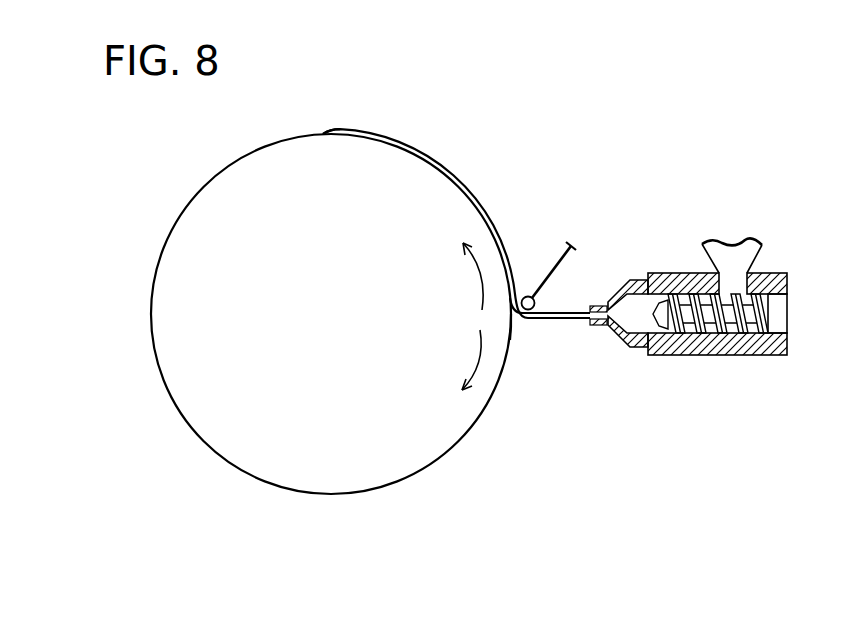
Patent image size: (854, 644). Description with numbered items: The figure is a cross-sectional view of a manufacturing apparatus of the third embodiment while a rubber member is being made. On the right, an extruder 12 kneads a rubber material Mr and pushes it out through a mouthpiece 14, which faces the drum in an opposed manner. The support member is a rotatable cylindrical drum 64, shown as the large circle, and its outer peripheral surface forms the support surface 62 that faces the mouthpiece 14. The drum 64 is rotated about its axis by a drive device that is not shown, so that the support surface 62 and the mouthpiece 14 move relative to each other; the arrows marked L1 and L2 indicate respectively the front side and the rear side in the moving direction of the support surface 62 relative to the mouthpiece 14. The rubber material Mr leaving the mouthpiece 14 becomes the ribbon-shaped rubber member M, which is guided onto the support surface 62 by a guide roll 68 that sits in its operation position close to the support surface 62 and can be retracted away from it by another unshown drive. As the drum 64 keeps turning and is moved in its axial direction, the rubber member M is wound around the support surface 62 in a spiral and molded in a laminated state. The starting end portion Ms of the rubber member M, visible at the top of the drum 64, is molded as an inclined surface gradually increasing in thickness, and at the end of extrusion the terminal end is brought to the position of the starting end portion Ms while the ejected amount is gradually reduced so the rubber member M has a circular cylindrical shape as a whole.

The drum 64 is at (277, 460).
The support surface 62 is at (513, 338).
The rubber member M is at (466, 180).
The starting end portion Ms is at (323, 130).
The guide roll 68 is at (527, 296).
The rubber material Mr is at (585, 316).
The mouthpiece 14 is at (598, 327).
The extruder 12 is at (727, 357).
The front side in moving direction L1 is at (464, 276).
The rear side in moving direction L2 is at (462, 360).